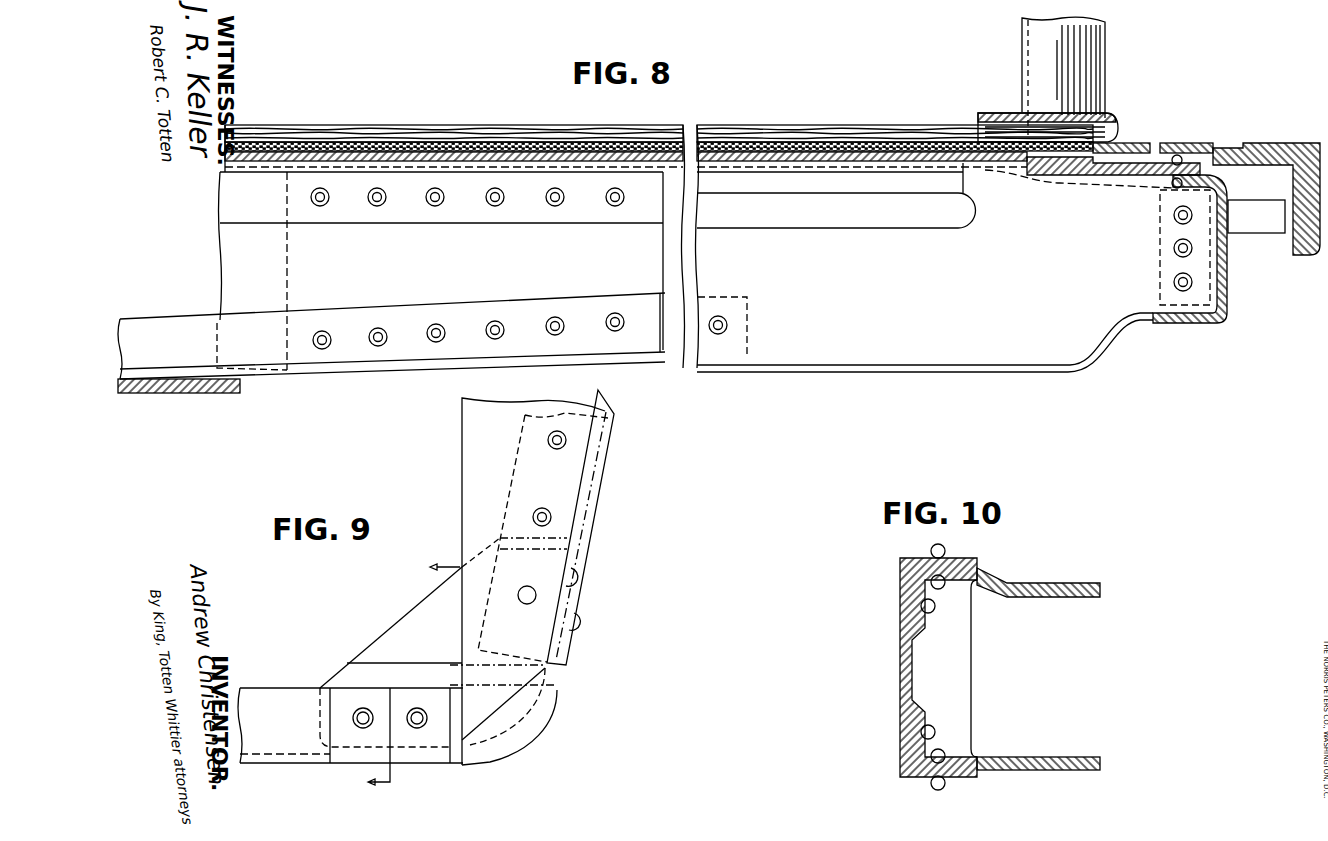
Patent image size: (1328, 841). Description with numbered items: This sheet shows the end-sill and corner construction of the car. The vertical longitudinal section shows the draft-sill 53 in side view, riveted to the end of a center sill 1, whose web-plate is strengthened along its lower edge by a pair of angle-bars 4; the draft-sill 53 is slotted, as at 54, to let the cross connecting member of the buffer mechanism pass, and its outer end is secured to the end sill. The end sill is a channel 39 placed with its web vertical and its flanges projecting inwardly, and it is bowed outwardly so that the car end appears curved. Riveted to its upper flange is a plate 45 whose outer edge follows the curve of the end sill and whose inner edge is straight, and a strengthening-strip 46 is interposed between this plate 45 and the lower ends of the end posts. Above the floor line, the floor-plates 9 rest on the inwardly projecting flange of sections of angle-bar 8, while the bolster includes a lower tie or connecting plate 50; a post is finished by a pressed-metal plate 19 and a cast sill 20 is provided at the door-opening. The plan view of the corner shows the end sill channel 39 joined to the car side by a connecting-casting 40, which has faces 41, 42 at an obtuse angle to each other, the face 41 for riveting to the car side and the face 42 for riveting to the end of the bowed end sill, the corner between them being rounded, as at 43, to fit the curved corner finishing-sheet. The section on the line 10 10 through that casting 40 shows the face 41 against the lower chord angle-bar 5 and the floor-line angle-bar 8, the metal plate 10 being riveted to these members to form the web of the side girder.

In FIG. 8, the center sill 1 is at (250, 272).
In FIG. 8, the angle-bars 4 is at (139, 328).
In FIG. 10, the angle-bar 5 is at (900, 752).
In FIG. 9, the angle-bar sections 8 is at (288, 743).
In FIG. 10, the angle-bar sections 8 is at (900, 567).
In FIG. 8, the floor-plates 9 is at (832, 162).
In FIG. 9, the metal plate 10 is at (405, 672).
In FIG. 8, the pressed-metal plate 19 is at (1085, 80).
In FIG. 8, the sills 20 is at (1112, 125).
In FIG. 8, the channel 39 is at (1230, 280).
In FIG. 9, the channel 39 is at (598, 515).
In FIG. 9, the connecting-castings 40 is at (405, 612).
In FIG. 10, the connecting-castings 40 is at (963, 648).
In FIG. 9, the face 41 is at (578, 600).
In FIG. 10, the face 41 is at (907, 587).
In FIG. 9, the face 42 is at (423, 753).
In FIG. 9, the rounded corner portion 43 is at (520, 742).
In FIG. 8, the plate 45 is at (1110, 168).
In FIG. 9, the plate 45 is at (480, 432).
In FIG. 8, the strengthening-strip 46 is at (1063, 163).
In FIG. 8, the lower tie or connecting plate 50 is at (235, 386).
In FIG. 8, the draft-sills 53 is at (925, 248).
In FIG. 8, the slot 54 is at (836, 210).